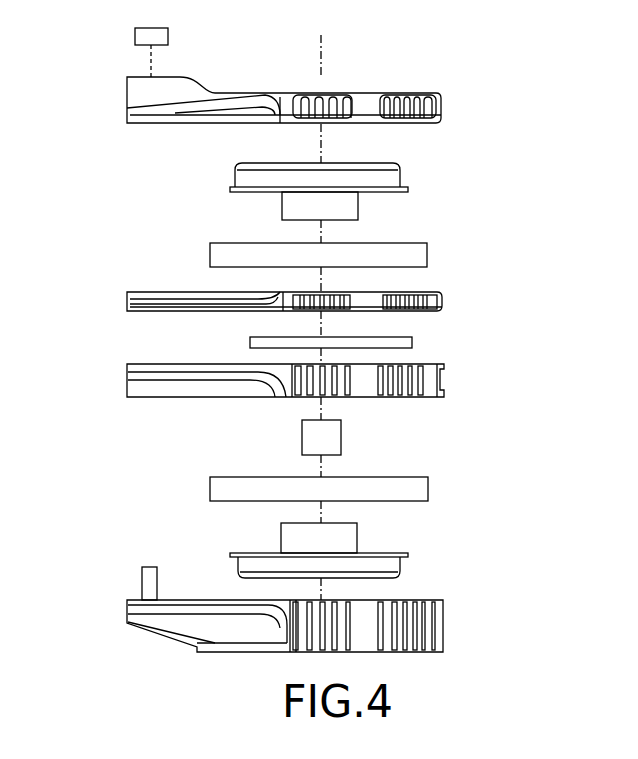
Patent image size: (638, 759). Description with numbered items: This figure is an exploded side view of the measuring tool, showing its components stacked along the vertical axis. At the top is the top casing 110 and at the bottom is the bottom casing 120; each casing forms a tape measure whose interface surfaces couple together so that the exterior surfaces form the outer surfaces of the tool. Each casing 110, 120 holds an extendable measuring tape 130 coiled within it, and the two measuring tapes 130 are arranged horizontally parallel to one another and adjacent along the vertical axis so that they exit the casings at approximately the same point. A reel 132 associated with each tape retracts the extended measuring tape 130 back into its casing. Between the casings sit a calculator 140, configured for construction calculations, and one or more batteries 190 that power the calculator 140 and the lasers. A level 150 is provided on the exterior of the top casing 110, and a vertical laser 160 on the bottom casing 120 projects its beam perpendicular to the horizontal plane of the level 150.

The top casing 110 is at (443, 104).
The bottom casing 120 is at (444, 378).
The measuring tape 130 is at (427, 254).
The reel 132 is at (408, 180).
The calculator 140 is at (412, 342).
The level 150 is at (133, 32).
The vertical laser 160 is at (142, 580).
The battery 190 is at (341, 436).